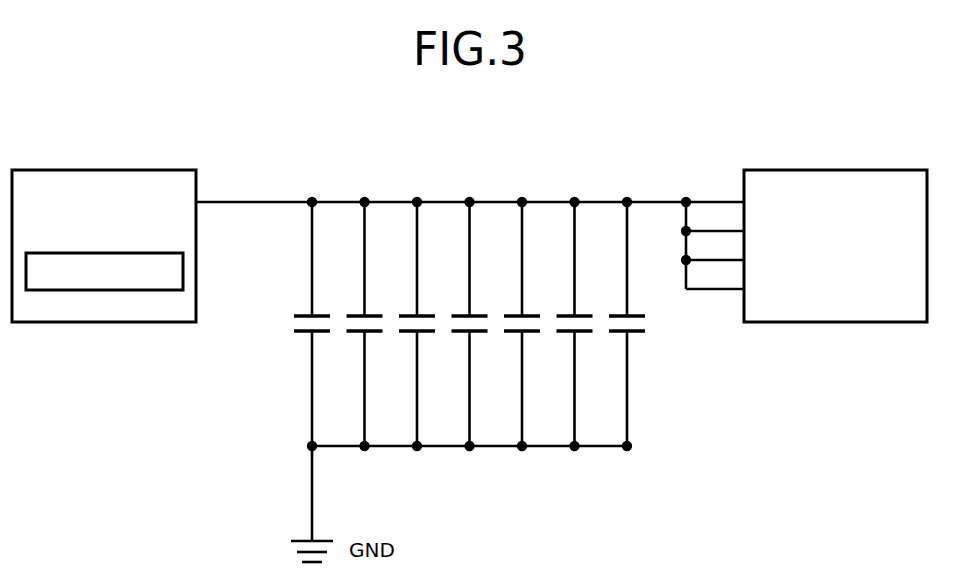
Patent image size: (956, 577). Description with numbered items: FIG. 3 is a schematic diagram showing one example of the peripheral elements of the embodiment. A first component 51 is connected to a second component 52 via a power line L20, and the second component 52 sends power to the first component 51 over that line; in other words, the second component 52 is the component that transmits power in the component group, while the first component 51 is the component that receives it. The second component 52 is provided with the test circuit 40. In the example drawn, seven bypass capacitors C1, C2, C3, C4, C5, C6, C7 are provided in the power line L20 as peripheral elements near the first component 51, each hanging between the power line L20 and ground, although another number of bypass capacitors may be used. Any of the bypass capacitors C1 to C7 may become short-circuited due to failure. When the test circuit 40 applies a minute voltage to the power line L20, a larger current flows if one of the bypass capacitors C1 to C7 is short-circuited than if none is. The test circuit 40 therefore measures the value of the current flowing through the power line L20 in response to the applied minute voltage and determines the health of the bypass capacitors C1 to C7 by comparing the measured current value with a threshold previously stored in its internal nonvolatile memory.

The second component 52 is at (103, 170).
The test circuit 40 is at (103, 253).
The first component 51 is at (832, 170).
The power line L20 is at (260, 201).
The bypass capacitor C1 is at (306, 316).
The bypass capacitor C2 is at (358, 316).
The bypass capacitor C3 is at (411, 316).
The bypass capacitor C4 is at (464, 316).
The bypass capacitor C5 is at (516, 316).
The bypass capacitor C6 is at (568, 316).
The bypass capacitor C7 is at (621, 316).